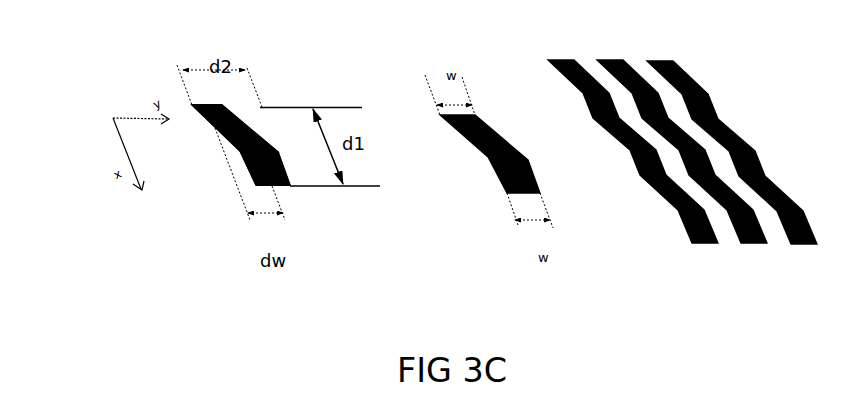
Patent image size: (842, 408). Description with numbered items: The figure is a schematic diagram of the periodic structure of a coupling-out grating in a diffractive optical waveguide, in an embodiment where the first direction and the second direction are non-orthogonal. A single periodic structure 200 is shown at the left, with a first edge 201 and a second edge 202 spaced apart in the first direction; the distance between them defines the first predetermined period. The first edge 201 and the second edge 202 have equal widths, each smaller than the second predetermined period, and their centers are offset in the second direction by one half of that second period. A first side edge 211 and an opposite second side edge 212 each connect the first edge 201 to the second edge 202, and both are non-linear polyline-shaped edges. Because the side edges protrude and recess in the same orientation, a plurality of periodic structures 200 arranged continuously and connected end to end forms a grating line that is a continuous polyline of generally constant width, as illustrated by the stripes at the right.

The periodic structure 200 is at (162, 65).
The first edge 201 is at (193, 103).
The second side edge 212 is at (241, 117).
The first side edge 211 is at (237, 158).
The second edge 202 is at (289, 197).